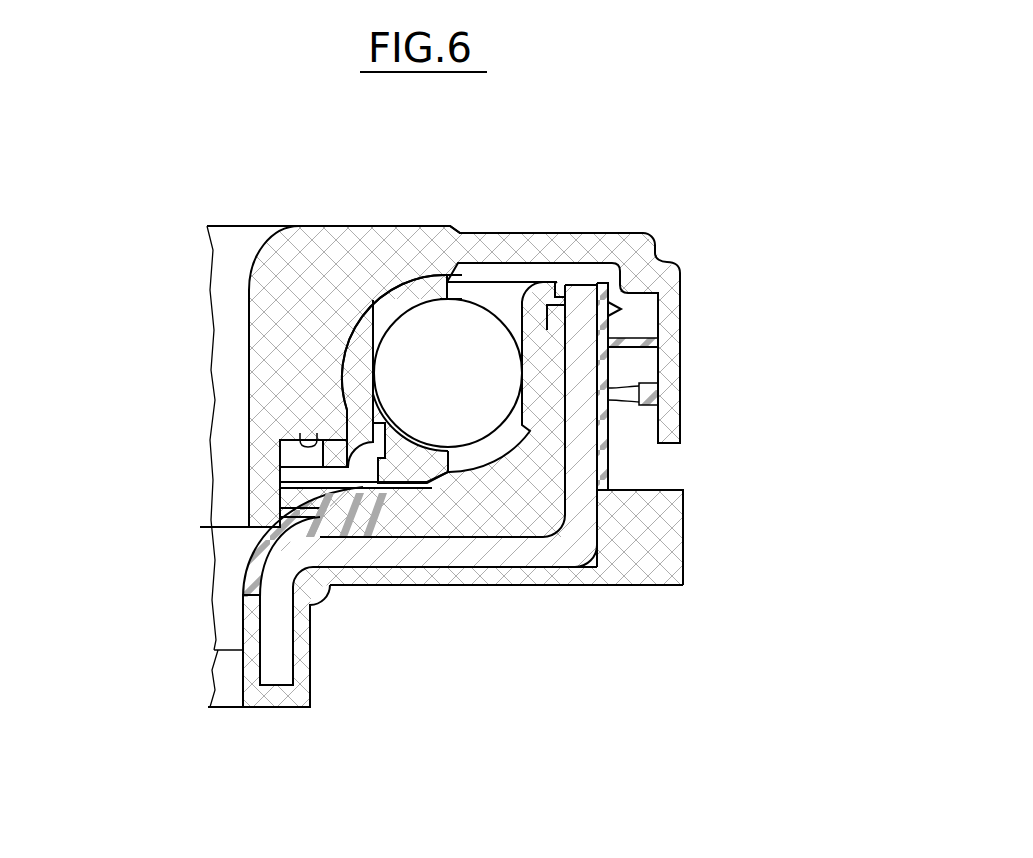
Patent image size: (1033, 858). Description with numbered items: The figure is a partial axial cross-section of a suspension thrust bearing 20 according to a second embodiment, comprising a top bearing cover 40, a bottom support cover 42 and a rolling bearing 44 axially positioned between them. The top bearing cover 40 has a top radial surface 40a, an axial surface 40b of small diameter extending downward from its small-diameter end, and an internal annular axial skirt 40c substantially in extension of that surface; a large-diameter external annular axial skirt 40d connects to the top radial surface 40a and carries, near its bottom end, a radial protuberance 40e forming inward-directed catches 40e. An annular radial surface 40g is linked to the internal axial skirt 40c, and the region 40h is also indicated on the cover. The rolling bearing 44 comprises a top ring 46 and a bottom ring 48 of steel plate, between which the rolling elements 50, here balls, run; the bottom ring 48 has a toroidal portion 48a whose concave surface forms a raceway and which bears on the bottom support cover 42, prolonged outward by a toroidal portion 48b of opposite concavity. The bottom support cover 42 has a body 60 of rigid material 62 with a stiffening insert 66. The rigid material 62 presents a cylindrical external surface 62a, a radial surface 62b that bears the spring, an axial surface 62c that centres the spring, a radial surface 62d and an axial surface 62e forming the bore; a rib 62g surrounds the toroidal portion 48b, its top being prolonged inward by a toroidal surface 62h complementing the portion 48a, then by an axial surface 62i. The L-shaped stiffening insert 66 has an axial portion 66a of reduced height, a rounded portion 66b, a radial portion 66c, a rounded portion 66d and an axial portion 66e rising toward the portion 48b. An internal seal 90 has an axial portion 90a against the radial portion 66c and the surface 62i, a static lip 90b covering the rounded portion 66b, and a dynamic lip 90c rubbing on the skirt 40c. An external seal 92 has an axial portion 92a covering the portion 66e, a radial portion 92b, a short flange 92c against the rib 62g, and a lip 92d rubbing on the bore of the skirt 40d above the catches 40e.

The suspension thrust bearing 20 is at (466, 188).
The top bearing cover 40 is at (302, 224).
The top radial surface 40a is at (425, 224).
The axial surface of small diameter 40b is at (249, 343).
The internal annular axial skirt 40c is at (262, 473).
The external annular axial skirt 40d is at (668, 365).
The radial protuberance 40e is at (672, 430).
The annular radial surface 40g is at (316, 433).
The housing inner wall 40h is at (382, 312).
The bottom support cover 42 is at (686, 515).
The rolling bearing 44 is at (494, 294).
The top ring 46 is at (410, 291).
The bottom ring 48 is at (602, 305).
The toroidal portion 48a is at (488, 458).
The toroidal portion 48b is at (550, 288).
The rolling elements 50 is at (461, 386).
The body 60 is at (679, 594).
The rigid material 62 is at (686, 577).
The cylindrical axial external surface 62a is at (686, 548).
The annular radial surface 62b is at (655, 588).
The axial surface 62c is at (313, 677).
The radial annular surface 62d is at (298, 708).
The axial surface 62e is at (220, 650).
The second axial annular rib 62g is at (604, 328).
The toroidal surface 62h is at (522, 432).
The axial surface 62i is at (387, 513).
The stiffening insert 66 is at (466, 556).
The axial portion 66a is at (277, 664).
The rounded portion 66b is at (250, 620).
The radial portion 66c is at (432, 550).
The rounded portion 66d is at (568, 538).
The axial portion 66e is at (582, 476).
The internal seal 90 is at (252, 552).
The annular axial portion 90a is at (286, 571).
The static sealing lip 90b is at (257, 580).
The dynamic sealing lip 90c is at (298, 503).
The external seal 92 is at (614, 428).
The annular axial portion 92a is at (648, 392).
The radial portion 92b is at (585, 283).
The short axial flange 92c is at (558, 310).
The annular lip 92d is at (634, 333).